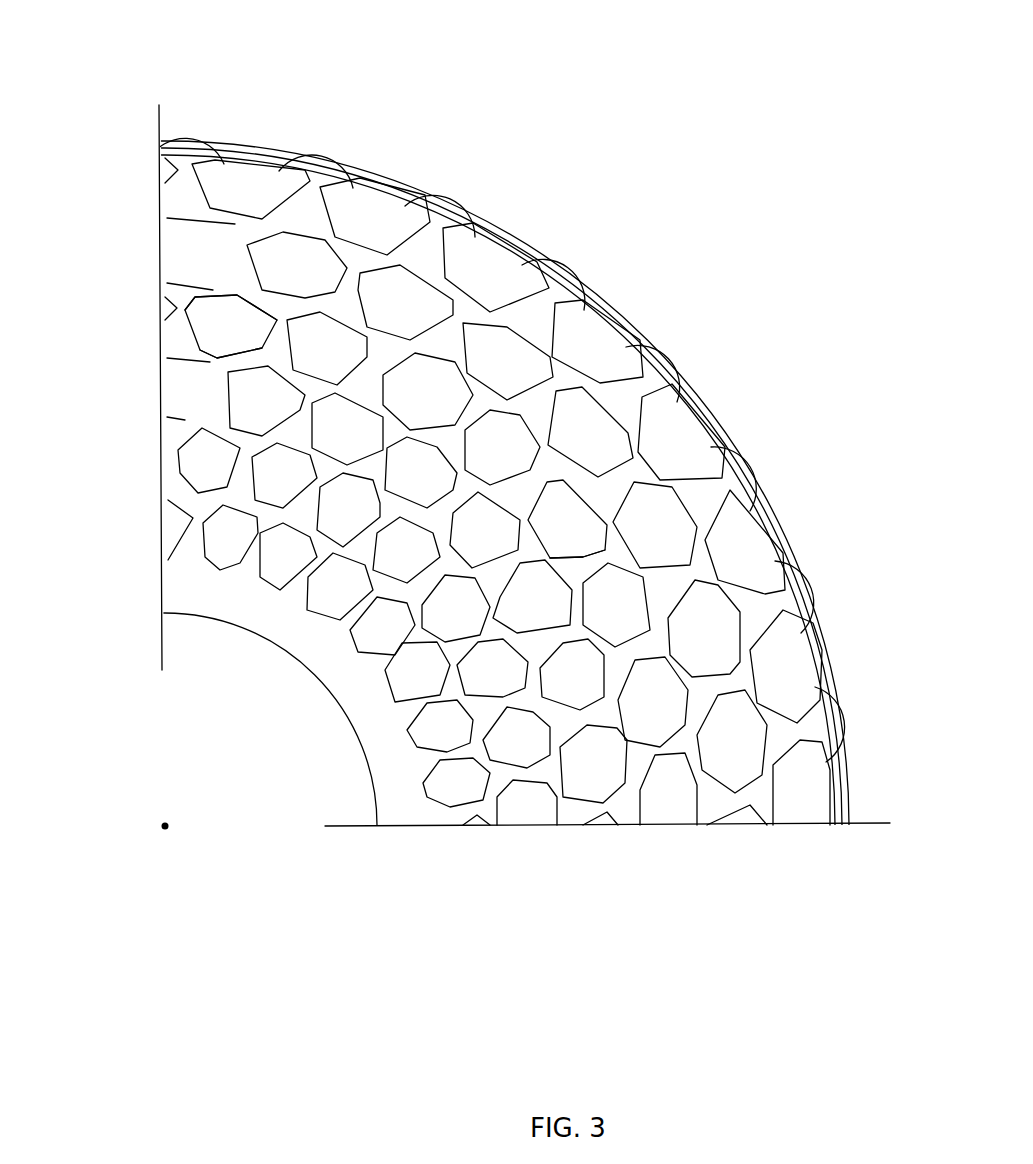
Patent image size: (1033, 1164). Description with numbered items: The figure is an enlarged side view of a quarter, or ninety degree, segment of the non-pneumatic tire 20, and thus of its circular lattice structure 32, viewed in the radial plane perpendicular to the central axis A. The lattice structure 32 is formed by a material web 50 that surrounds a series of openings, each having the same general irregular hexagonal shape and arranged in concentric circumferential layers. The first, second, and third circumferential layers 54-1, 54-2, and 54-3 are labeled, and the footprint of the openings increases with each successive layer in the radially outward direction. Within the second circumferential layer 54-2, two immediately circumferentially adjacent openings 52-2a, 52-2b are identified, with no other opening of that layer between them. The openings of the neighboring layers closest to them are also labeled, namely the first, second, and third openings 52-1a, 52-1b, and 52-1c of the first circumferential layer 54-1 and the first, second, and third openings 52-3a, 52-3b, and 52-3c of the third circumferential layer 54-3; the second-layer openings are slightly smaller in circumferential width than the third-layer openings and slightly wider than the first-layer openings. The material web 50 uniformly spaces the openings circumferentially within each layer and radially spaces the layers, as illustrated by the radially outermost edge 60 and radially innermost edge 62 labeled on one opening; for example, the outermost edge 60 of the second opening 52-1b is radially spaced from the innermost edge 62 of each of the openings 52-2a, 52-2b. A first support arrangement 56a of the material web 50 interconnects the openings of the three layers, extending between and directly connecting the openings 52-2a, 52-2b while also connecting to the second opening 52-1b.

The non-pneumatic tire 20 is at (775, 72).
The lattice structure 32 is at (368, 232).
The material web 50 is at (300, 213).
The first opening of the first circumferential layer 52-1a is at (573, 688).
The second opening of the first circumferential layer 52-1b is at (525, 612).
The third opening of the first circumferential layer 52-1c is at (480, 533).
The first opening of the second circumferential layer 52-2a is at (627, 608).
The second opening of the second circumferential layer 52-2b is at (567, 517).
The first opening of the third circumferential layer 52-3a is at (713, 623).
The second opening of the third circumferential layer 52-3b is at (657, 523).
The third opening of the third circumferential layer 52-3c is at (592, 437).
The first circumferential layer 54-1 is at (593, 832).
The second circumferential layer 54-2 is at (665, 832).
The third circumferential layer 54-3 is at (745, 832).
The first support arrangement 56a is at (578, 565).
The radially outermost edge 60 is at (235, 295).
The radially innermost edge 62 is at (222, 358).
The central axis A is at (163, 828).